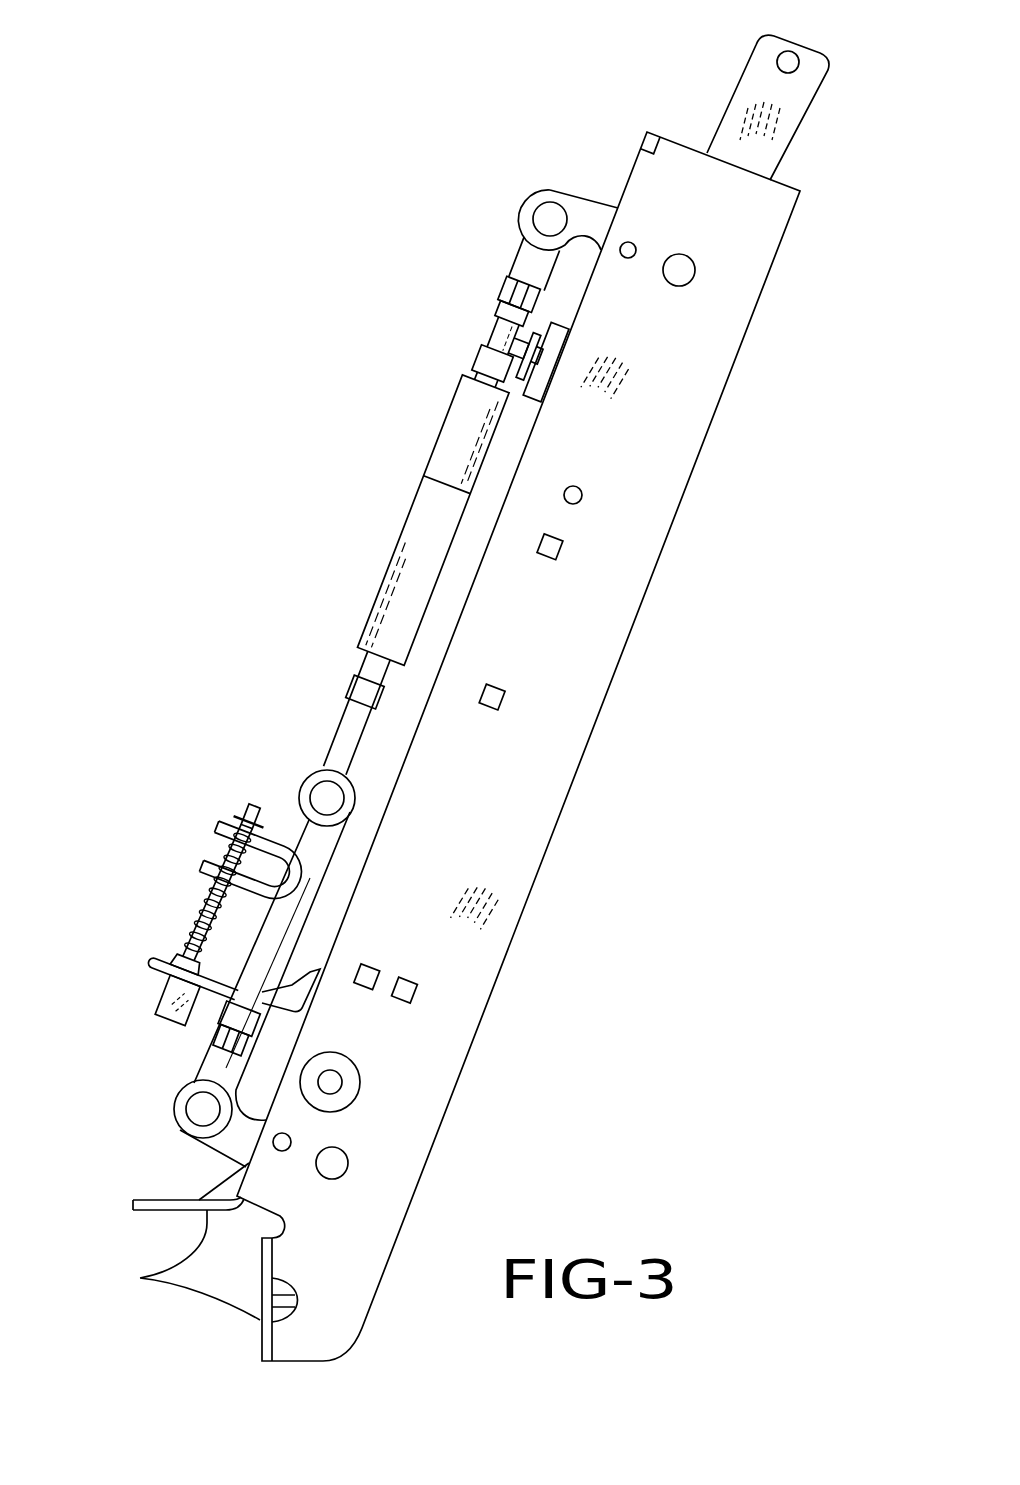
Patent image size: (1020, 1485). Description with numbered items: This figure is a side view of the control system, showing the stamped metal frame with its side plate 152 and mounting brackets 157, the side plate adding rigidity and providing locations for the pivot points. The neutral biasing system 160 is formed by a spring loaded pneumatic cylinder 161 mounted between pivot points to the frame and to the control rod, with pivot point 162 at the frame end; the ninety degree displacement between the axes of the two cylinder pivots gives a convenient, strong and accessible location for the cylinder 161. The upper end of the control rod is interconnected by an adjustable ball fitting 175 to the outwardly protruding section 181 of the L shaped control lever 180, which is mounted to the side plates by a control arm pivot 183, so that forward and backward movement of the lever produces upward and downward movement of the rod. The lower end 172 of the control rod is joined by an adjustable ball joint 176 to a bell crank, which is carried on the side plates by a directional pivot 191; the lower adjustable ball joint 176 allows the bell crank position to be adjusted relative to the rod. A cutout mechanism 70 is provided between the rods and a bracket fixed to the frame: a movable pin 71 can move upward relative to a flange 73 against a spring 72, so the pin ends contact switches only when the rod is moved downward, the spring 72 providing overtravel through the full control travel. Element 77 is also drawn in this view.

The cutout mechanism 70 is at (200, 922).
The movable pin 71 is at (250, 805).
The spring 72 is at (205, 895).
The flange 73 is at (218, 822).
The cross bar 77 is at (152, 960).
The side plate 152 is at (722, 340).
The mounting bracket 157 is at (150, 1279).
The neutral biasing system 160 is at (409, 531).
The spring loaded pneumatic cylinder 161 is at (408, 555).
The pivot point 162 is at (498, 345).
The lower end of control rod 172 is at (248, 995).
The adjustable ball fitting 175 is at (517, 297).
The adjustable ball joint 176 is at (228, 1040).
The control lever 180 is at (776, 38).
The outwardly protruding section 181 is at (549, 218).
The control arm pivot 183 is at (684, 268).
The directional pivot 191 is at (332, 1082).